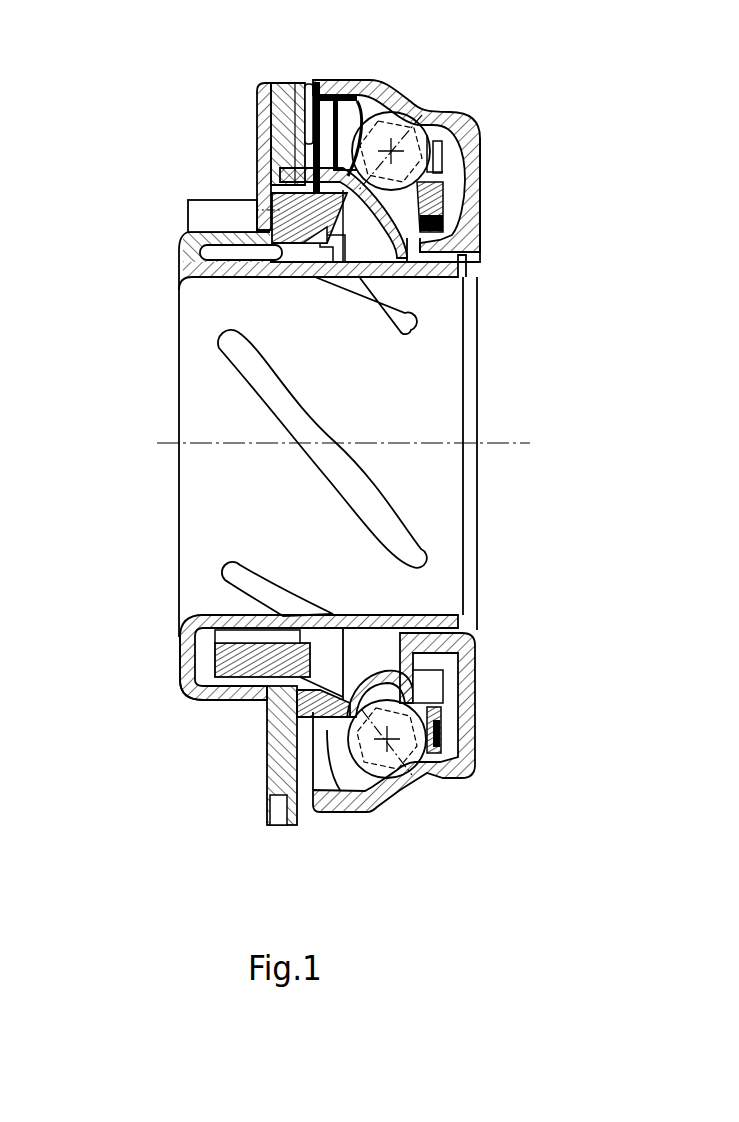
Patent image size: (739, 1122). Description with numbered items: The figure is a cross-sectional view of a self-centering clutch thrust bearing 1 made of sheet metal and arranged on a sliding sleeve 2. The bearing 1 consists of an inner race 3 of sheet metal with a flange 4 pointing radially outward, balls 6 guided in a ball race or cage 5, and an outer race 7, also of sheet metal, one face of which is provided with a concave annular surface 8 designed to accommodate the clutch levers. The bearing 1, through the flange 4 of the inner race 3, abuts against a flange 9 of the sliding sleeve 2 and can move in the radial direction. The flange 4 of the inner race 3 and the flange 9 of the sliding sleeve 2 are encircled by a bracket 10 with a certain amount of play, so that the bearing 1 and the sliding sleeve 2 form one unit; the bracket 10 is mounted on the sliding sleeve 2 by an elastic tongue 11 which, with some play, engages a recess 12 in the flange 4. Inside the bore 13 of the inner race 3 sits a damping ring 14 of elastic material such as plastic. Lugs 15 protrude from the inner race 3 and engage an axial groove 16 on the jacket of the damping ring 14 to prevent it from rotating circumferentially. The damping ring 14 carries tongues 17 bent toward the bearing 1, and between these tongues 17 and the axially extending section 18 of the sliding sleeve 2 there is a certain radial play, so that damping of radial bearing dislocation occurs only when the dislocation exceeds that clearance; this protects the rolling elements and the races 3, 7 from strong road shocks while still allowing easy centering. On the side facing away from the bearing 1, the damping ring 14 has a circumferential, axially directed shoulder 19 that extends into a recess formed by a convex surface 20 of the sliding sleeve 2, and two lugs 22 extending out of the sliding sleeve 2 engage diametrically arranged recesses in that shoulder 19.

The clutch thrust bearing 1 is at (494, 173).
The sliding sleeve 2 is at (428, 286).
The inner race 3 is at (428, 215).
The flange 4 is at (297, 830).
The cage 5 is at (443, 166).
The balls 6 is at (406, 130).
The outer race 7 is at (364, 66).
The concave annular surface 8 is at (480, 195).
The flange 9 is at (268, 775).
The bracket 10 is at (262, 175).
The elastic tongue 11 is at (250, 130).
The recess 12 is at (310, 84).
The bore 13 is at (480, 257).
The damping ring 14 is at (213, 200).
The lugs 15 is at (285, 190).
The axial groove 16 is at (283, 200).
The tongues 17 is at (293, 270).
The axially extending section 18 is at (376, 281).
The shoulder 19 is at (200, 692).
The convex surface 20 is at (205, 660).
The lugs 22 is at (182, 275).